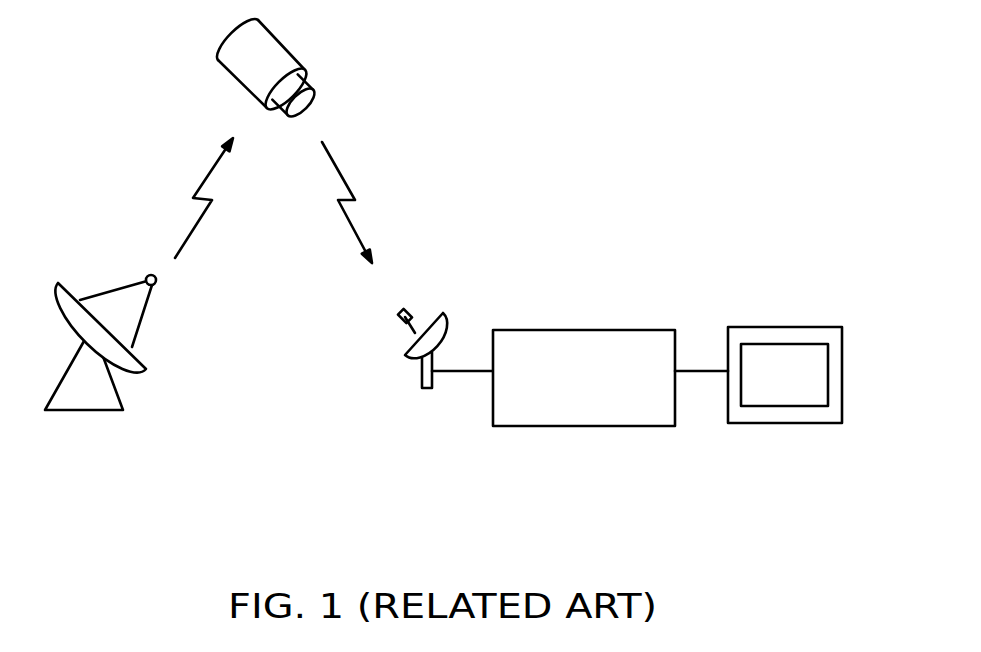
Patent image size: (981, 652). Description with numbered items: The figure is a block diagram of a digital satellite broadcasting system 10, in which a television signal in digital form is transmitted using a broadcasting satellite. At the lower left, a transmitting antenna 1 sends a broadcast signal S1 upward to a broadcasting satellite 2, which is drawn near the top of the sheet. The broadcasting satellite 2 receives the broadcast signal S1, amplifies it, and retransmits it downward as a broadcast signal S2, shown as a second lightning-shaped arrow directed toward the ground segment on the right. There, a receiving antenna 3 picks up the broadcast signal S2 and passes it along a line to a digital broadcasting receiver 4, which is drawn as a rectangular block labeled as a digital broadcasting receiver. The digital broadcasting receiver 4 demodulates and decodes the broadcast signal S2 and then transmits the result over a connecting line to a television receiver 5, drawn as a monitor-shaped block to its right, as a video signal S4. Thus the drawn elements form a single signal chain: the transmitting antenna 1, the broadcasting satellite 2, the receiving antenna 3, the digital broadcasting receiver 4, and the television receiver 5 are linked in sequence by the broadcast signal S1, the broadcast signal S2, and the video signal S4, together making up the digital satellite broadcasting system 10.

The transmitting antenna 1 is at (122, 400).
The broadcasting satellite 2 is at (293, 47).
The receiving antenna 3 is at (445, 318).
The digital broadcasting receiver 4 is at (552, 330).
The television receiver 5 is at (783, 326).
The digital satellite broadcasting system 10 is at (727, 525).
The broadcast signal S1 is at (193, 233).
The broadcast signal S2 is at (353, 220).
The video signal S4 is at (700, 374).